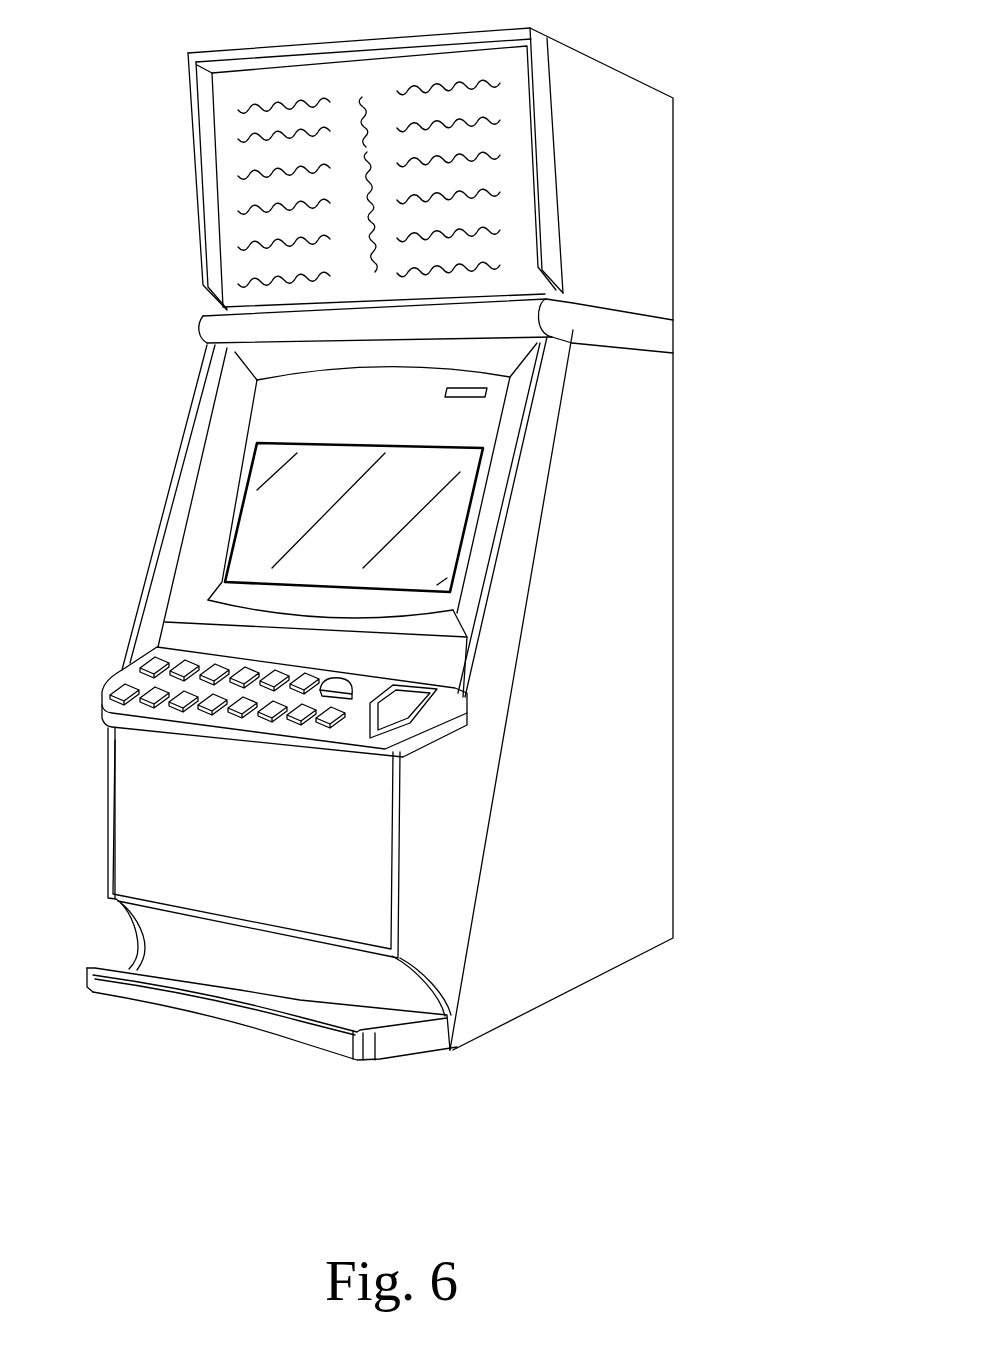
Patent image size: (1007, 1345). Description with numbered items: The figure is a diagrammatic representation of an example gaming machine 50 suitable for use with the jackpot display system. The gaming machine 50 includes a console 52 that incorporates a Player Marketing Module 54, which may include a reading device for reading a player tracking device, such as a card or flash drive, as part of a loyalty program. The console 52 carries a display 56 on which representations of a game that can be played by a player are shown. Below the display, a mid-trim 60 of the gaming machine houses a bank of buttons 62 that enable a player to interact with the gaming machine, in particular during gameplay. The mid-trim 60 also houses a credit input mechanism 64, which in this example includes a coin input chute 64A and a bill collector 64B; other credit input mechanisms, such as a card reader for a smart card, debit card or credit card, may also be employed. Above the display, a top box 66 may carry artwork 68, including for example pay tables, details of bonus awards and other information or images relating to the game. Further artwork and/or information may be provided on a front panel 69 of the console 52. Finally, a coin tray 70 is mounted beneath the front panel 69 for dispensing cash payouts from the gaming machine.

The gaming machine 50 is at (636, 65).
The console 52 is at (636, 441).
The Player Marketing Module 54 is at (660, 333).
The display 56 is at (243, 498).
The mid-trim 60 is at (308, 717).
The bank of buttons 62 is at (151, 710).
The credit input mechanism 64 is at (427, 665).
The coin input chute 64A is at (347, 680).
The bill collector 64B is at (357, 757).
The top box 66 is at (200, 250).
The artwork 68 is at (247, 143).
The front panel 69 is at (128, 822).
The coin tray 70 is at (85, 983).